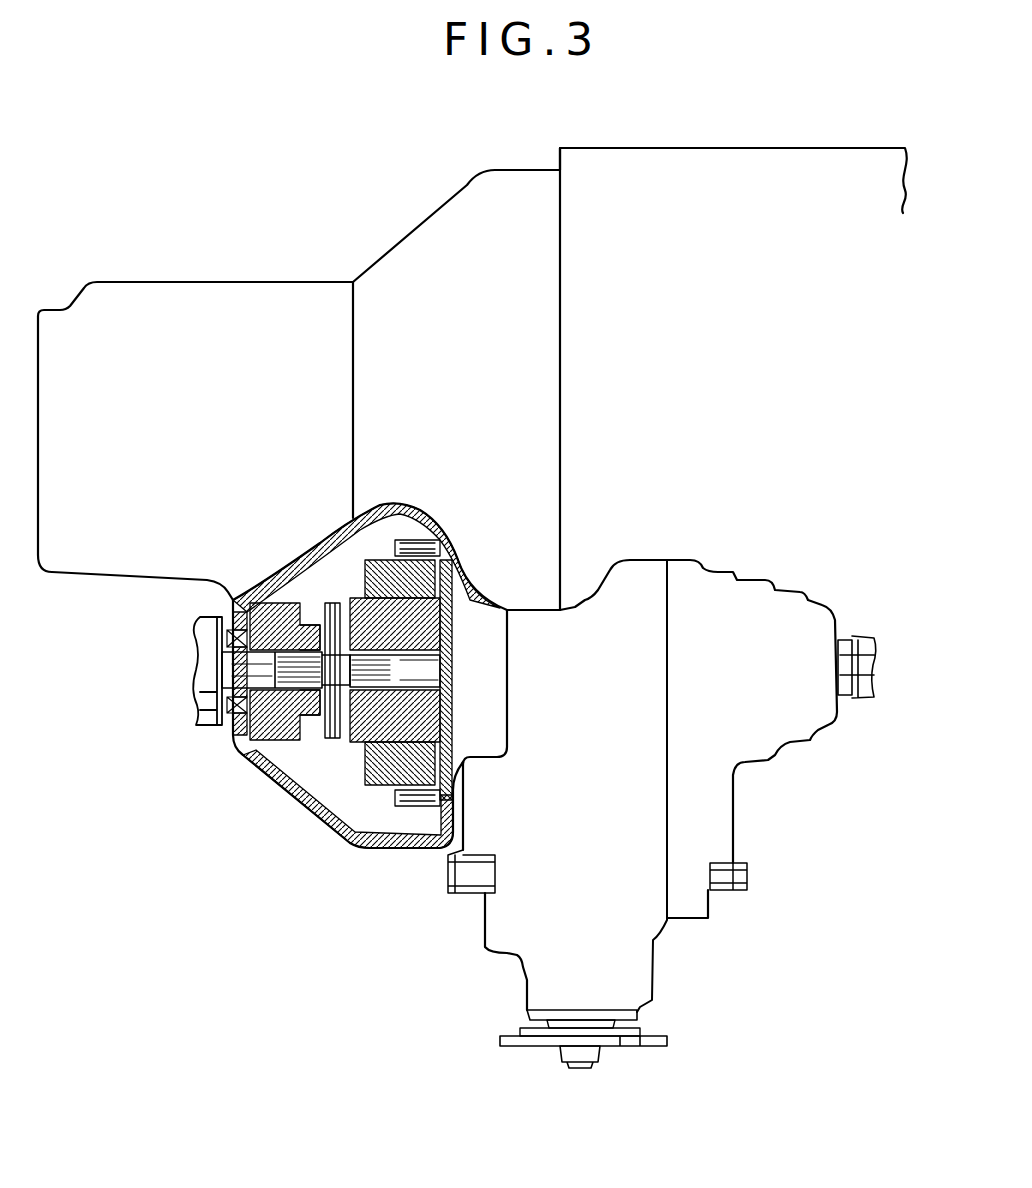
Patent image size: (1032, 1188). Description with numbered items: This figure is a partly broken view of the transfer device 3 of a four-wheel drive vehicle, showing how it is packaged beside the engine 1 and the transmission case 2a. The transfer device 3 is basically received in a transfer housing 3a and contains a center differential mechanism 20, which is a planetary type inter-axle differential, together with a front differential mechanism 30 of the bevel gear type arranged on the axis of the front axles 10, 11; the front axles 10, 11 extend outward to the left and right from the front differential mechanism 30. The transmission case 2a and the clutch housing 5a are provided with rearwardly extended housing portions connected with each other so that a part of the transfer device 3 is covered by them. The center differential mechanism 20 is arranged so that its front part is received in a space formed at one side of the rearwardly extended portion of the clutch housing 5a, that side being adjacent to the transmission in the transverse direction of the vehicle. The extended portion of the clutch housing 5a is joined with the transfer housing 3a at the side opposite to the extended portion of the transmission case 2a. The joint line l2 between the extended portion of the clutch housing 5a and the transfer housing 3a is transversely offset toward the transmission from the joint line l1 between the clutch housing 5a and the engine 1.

The engine 1 is at (650, 160).
The transmission case 2a is at (256, 292).
The transfer device 3 is at (342, 695).
The transfer housing 3a is at (708, 817).
The clutch housing 5a is at (530, 598).
The front axle 10 is at (208, 662).
The front axle 11 is at (873, 650).
The center differential mechanism 20 is at (357, 785).
The front differential mechanism 30 is at (300, 772).
The joint line l1 is at (560, 388).
The joint line l2 is at (507, 722).